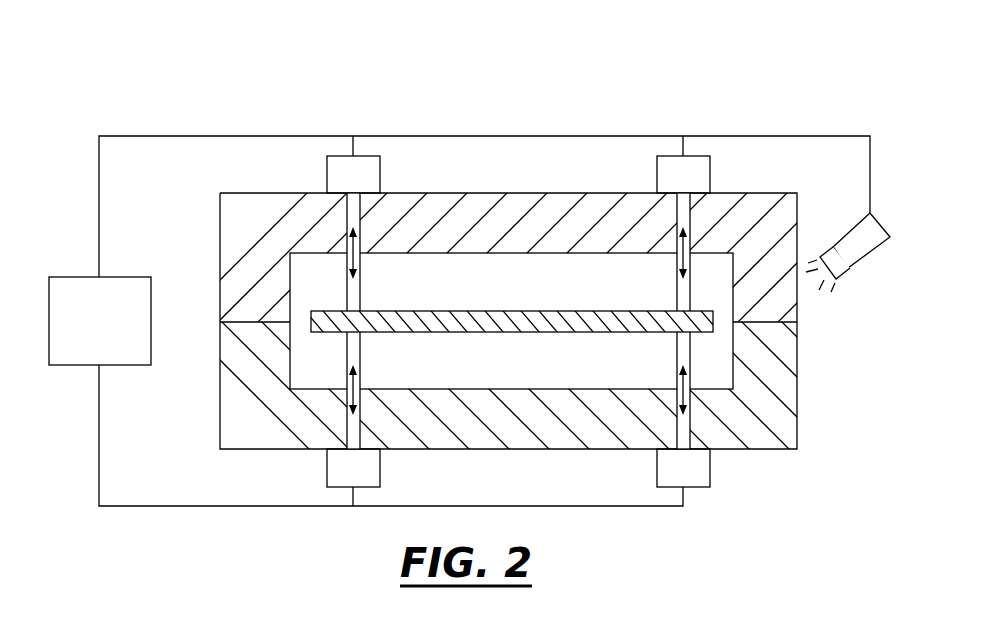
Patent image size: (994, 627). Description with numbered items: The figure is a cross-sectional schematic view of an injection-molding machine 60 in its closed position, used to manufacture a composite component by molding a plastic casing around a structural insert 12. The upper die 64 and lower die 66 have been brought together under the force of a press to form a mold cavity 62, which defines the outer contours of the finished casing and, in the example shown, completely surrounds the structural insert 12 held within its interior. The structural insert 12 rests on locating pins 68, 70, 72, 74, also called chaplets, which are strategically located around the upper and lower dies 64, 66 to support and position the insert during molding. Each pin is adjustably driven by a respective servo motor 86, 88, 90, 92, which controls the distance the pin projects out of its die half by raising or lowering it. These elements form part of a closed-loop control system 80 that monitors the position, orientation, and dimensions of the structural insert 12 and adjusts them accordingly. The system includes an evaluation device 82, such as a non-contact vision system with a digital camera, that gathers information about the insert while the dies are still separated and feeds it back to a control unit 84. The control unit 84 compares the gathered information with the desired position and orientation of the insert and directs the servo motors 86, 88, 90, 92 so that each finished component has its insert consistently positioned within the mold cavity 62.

The structural insert 12 is at (500, 316).
The injection-molding machine 60 is at (560, 364).
The mold cavity 62 is at (626, 296).
The upper die 64 is at (489, 202).
The lower die 66 is at (504, 444).
The locating pin 68 is at (362, 353).
The locating pin 70 is at (677, 358).
The locating pin 72 is at (362, 272).
The locating pin 74 is at (691, 272).
The closed-loop control system 80 is at (469, 262).
The evaluation device 82 is at (871, 252).
The control unit 84 is at (62, 276).
The servo motor 86 is at (380, 467).
The servo motor 88 is at (657, 470).
The servo motor 90 is at (327, 176).
The servo motor 92 is at (657, 173).